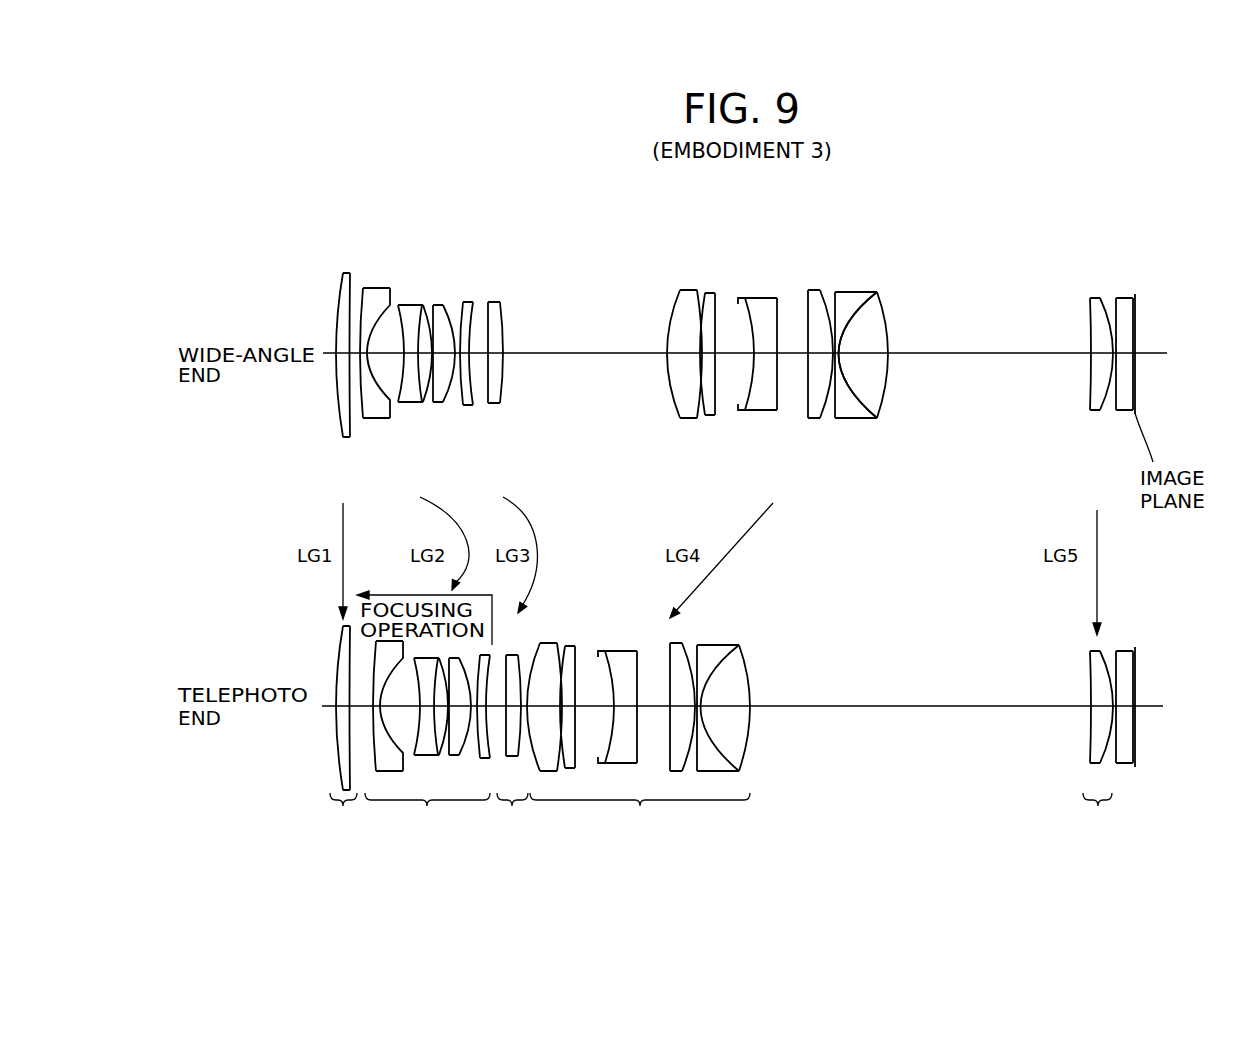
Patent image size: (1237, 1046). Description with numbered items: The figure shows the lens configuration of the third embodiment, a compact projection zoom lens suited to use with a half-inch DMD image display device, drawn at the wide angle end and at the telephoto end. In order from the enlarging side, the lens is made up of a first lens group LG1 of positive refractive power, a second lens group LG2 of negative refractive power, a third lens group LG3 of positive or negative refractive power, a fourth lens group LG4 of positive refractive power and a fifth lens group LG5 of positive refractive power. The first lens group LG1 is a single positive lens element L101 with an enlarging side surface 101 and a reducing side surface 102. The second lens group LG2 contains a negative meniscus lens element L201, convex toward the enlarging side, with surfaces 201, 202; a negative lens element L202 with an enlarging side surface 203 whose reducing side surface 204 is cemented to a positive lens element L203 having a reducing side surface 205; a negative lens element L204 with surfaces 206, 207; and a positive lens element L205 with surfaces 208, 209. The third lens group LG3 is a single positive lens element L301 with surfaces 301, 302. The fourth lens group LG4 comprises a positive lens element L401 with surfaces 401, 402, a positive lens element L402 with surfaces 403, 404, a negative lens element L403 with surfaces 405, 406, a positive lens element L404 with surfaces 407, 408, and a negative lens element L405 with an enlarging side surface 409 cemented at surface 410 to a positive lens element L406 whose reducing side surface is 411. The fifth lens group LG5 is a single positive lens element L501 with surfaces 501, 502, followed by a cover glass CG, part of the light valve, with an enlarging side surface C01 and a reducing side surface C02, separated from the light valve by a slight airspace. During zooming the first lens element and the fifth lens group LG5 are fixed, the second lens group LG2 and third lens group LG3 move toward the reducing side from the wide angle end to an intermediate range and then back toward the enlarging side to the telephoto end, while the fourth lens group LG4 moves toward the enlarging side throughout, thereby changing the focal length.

The enlarging side surface 101 is at (340, 282).
The reducing side surface 102 is at (347, 275).
The enlarging side surface 201 is at (362, 292).
The reducing side surface 202 is at (390, 290).
The enlarging side surface 203 is at (400, 306).
The cemented surface 204 is at (420, 306).
The reducing side surface 205 is at (426, 306).
The enlarging side surface 206 is at (436, 306).
The reducing side surface 207 is at (446, 306).
The enlarging side surface 208 is at (466, 303).
The reducing side surface 209 is at (475, 303).
The enlarging side surface 301 is at (490, 303).
The reducing side surface 302 is at (502, 318).
The enlarging side surface 401 is at (673, 307).
The reducing side surface 402 is at (697, 296).
The enlarging side surface 403 is at (703, 297).
The reducing side surface 404 is at (715, 293).
The enlarging side surface 405 is at (738, 302).
The reducing side surface 406 is at (777, 310).
The enlarging side surface 407 is at (808, 302).
The reducing side surface 408 is at (822, 297).
The enlarging side surface 409 is at (837, 297).
The cemented surface 410 is at (856, 308).
The reducing side surface 411 is at (885, 303).
The enlarging side surface 501 is at (1091, 320).
The reducing side surface 502 is at (1106, 313).
The enlarging side surface of cover glass C01 is at (1115, 298).
The reducing side surface of cover glass C02 is at (1132, 298).
The positive lens element L101 is at (315, 332).
The negative lens element L201 is at (375, 343).
The negative lens element L202 is at (430, 332).
The positive lens element L203 is at (459, 358).
The negative lens element L204 is at (489, 332).
The positive lens element L205 is at (530, 343).
The positive lens element L301 is at (555, 366).
The positive lens element L401 is at (675, 344).
The positive lens element L402 is at (731, 355).
The negative lens element L403 is at (779, 344).
The positive lens element L404 is at (841, 355).
The negative lens element L405 is at (886, 344).
The positive lens element L406 is at (900, 367).
The positive lens element L501 is at (1060, 364).
The cover glass CG is at (1110, 345).
The first lens group LG1 is at (344, 730).
The second lens group LG2 is at (427, 737).
The third lens group LG3 is at (512, 744).
The fourth lens group LG4 is at (638, 738).
The fifth lens group LG5 is at (1106, 740).